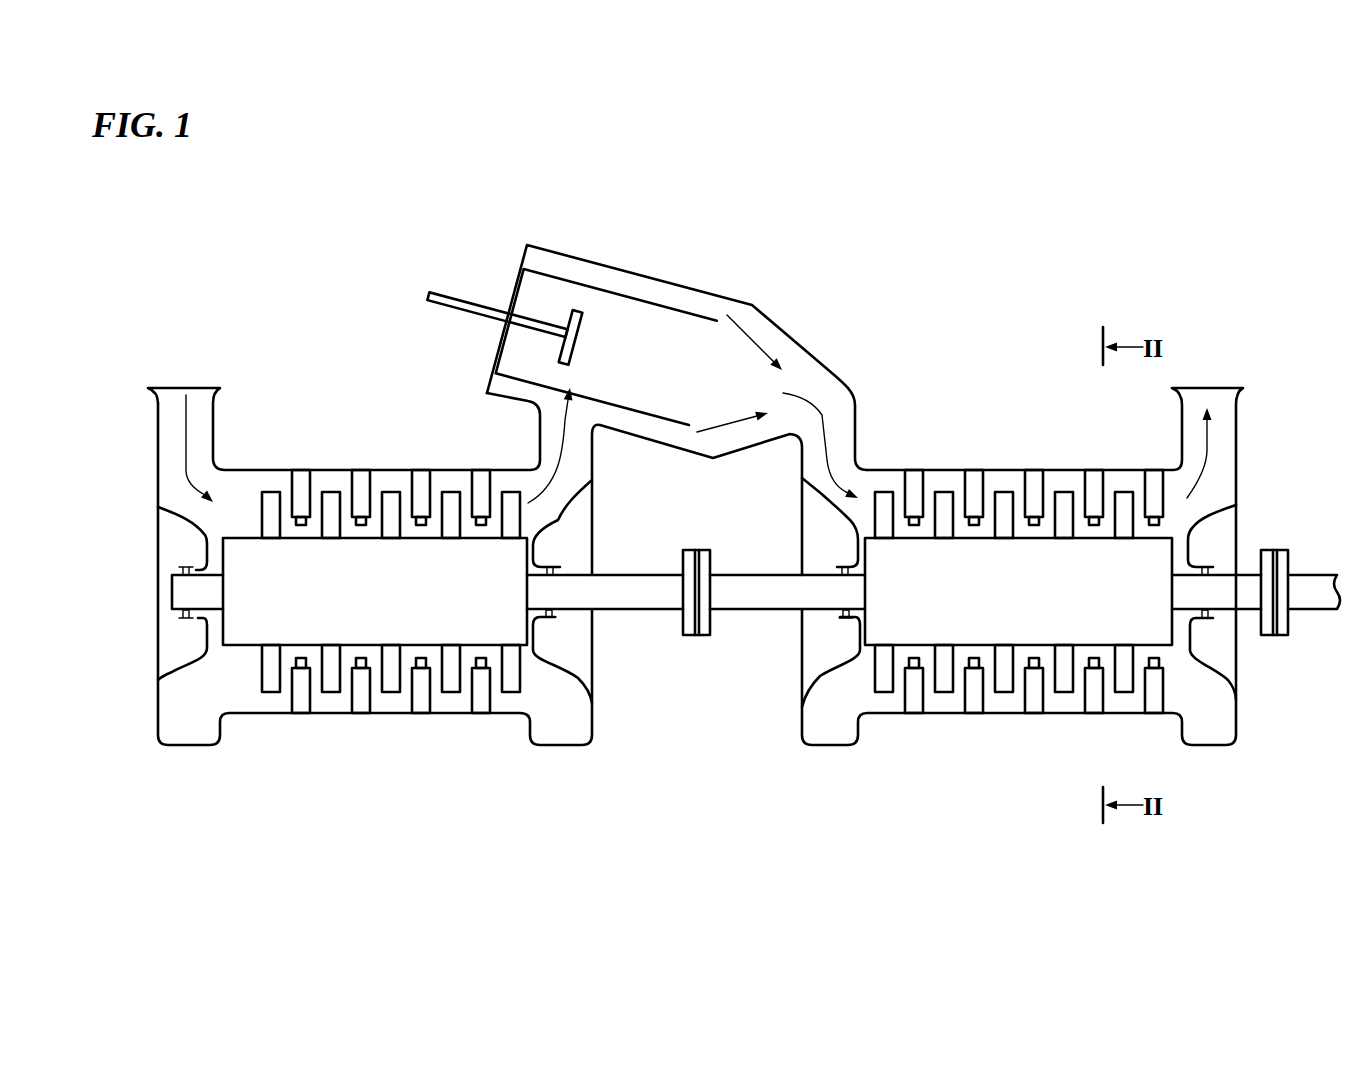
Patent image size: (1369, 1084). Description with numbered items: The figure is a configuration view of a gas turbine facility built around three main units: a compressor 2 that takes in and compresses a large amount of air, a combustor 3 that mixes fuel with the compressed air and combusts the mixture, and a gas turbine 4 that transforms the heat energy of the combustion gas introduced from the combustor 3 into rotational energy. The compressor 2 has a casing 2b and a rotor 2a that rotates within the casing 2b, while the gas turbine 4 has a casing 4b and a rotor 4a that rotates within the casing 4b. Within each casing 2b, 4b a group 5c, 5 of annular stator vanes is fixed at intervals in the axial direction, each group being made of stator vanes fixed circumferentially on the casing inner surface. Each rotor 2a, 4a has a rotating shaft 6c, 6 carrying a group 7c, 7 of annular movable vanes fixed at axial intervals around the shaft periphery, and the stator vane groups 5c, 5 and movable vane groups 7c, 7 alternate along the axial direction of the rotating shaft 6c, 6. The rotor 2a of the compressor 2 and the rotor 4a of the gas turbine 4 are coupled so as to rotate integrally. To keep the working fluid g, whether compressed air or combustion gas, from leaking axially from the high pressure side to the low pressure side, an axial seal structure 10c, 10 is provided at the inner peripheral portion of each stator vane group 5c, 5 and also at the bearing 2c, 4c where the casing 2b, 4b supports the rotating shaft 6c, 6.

The compressor 2 is at (367, 632).
The rotor 2a is at (394, 673).
The casing 2b is at (158, 715).
The bearing 2c is at (180, 520).
The combustor 3 is at (641, 229).
The gas turbine 4 is at (1045, 624).
The rotor 4a is at (1001, 673).
The casing 4b is at (1236, 718).
The bearing 4c is at (1210, 523).
The annular stator vane group 5 is at (1094, 470).
The annular stator vane group 5c is at (421, 470).
The rotating shaft 6 is at (870, 647).
The rotating shaft 6c is at (527, 647).
The annular movable vane group 7 is at (945, 692).
The annular movable vane group 7c is at (511, 692).
The axial seal structure 10 is at (421, 525).
The axial seal structure 10c is at (192, 617).
The working fluid g is at (186, 441).